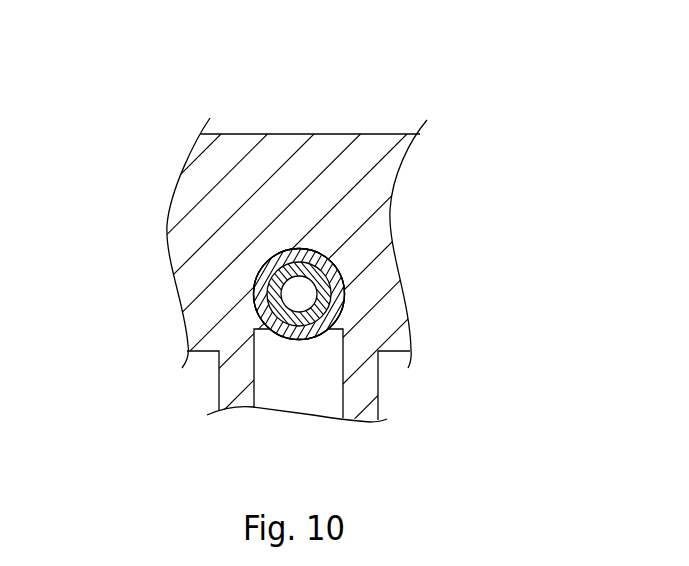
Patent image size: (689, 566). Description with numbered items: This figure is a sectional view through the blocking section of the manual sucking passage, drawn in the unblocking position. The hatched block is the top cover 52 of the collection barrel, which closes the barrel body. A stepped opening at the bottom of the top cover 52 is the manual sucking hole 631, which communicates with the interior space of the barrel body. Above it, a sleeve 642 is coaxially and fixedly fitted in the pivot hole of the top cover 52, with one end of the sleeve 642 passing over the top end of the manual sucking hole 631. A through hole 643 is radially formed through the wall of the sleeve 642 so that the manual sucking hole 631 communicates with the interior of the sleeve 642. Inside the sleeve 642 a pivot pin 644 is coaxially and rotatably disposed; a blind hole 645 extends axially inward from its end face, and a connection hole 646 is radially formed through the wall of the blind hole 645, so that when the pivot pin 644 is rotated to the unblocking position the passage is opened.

The top cover 52 is at (315, 157).
The manual sucking hole 631 is at (273, 382).
The sleeve 642 is at (300, 293).
The through hole 643 is at (300, 332).
The pivot pin 644 is at (272, 265).
The blind hole 645 is at (347, 283).
The connection hole 646 is at (300, 316).